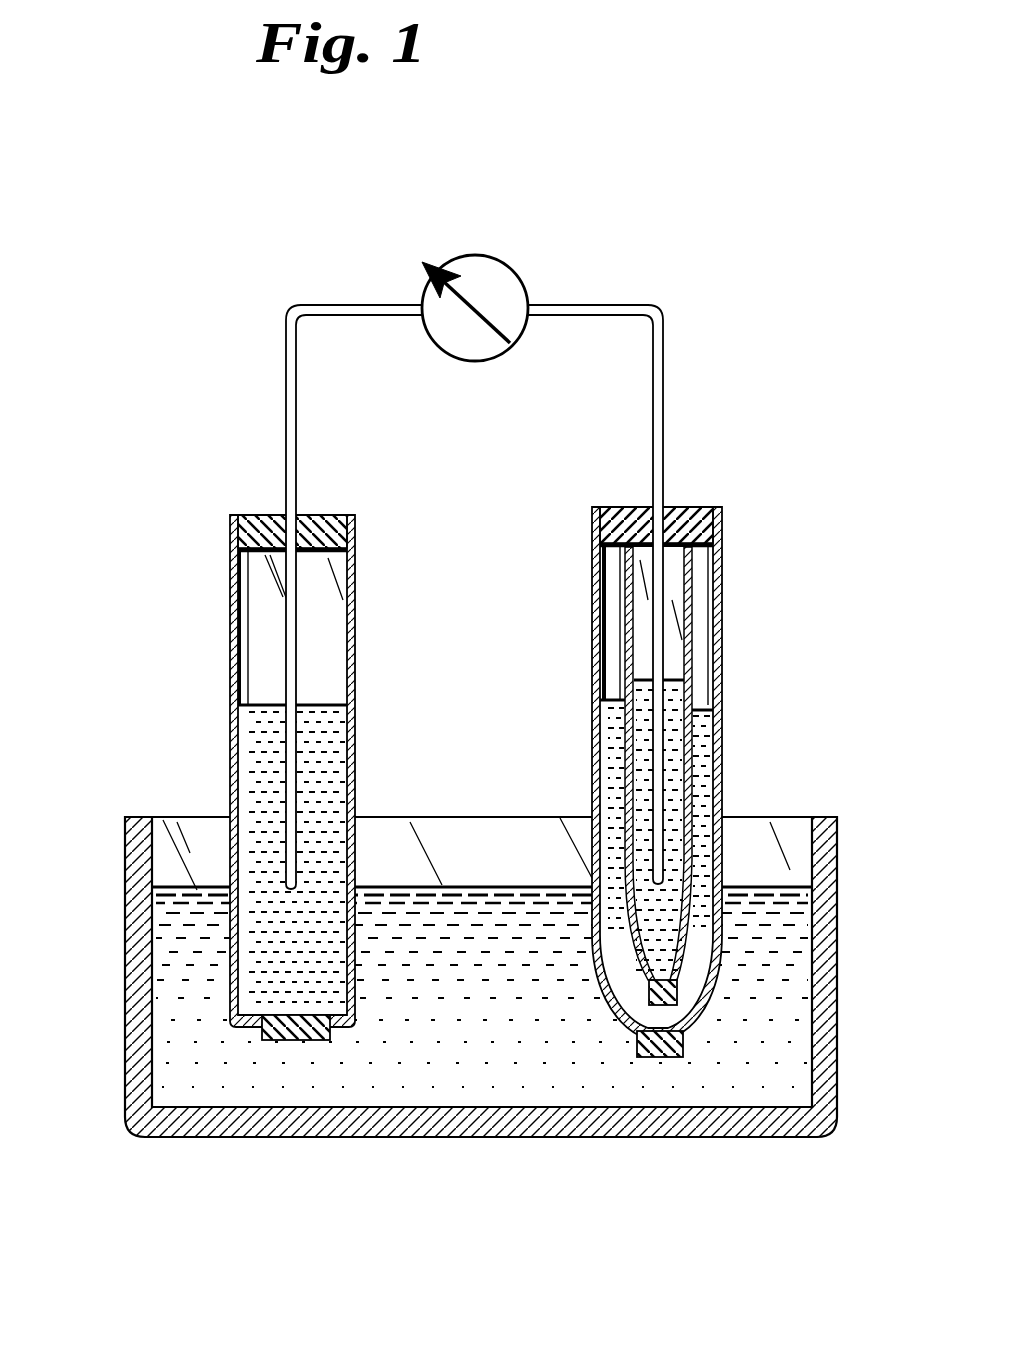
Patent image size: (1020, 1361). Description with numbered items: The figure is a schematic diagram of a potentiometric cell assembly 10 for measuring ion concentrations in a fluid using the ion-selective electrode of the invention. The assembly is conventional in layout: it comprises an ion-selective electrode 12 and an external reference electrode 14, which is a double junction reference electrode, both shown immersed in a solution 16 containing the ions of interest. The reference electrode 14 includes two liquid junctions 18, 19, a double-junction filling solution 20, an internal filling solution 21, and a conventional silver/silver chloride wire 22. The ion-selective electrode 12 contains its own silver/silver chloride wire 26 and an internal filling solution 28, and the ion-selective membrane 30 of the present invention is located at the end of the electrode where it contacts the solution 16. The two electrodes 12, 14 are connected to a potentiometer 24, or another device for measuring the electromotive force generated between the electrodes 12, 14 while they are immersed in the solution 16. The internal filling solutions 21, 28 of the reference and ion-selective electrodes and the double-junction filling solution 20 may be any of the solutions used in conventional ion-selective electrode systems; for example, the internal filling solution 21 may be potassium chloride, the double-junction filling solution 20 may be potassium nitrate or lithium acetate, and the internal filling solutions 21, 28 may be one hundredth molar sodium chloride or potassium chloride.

The potentiometric cell assembly 10 is at (244, 458).
The ion-selective electrode 12 is at (283, 861).
The external reference electrode 14 is at (700, 860).
The solution 16 is at (480, 1065).
The liquid junction 18 is at (655, 1057).
The liquid junction 19 is at (670, 995).
The double-junction filling solution 20 is at (762, 777).
The internal filling solution 21 is at (627, 636).
The silver/silver chloride wire 22 is at (662, 578).
The potentiometer 24 is at (488, 262).
The silver/silver chloride wire 26 is at (296, 585).
The internal filling solution 28 is at (312, 785).
The ion-selective membrane 30 is at (292, 1042).